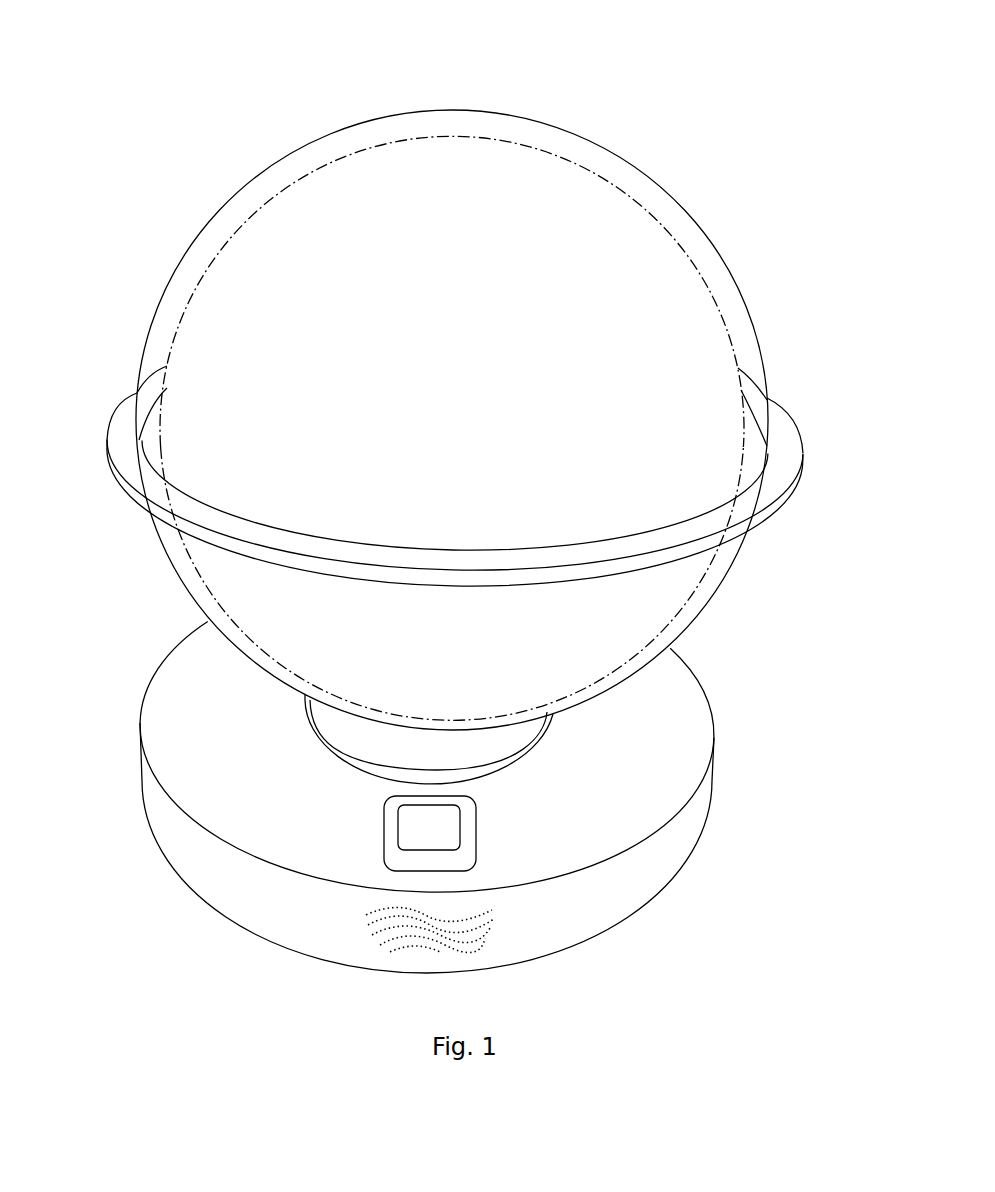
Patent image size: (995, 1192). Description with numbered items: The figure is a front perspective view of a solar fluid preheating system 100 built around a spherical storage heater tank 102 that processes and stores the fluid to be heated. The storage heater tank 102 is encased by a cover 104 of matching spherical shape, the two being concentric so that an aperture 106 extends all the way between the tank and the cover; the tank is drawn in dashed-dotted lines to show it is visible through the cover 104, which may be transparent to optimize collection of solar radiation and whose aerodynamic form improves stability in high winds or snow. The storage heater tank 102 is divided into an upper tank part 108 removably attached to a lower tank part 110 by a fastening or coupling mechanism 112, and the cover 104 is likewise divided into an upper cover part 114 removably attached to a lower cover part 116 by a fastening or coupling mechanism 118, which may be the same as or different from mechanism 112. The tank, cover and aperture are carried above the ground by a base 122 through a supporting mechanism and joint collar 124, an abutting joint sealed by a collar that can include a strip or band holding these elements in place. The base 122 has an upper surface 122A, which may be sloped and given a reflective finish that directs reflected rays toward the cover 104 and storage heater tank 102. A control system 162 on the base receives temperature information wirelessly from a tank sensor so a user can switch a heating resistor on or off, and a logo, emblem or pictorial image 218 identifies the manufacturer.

The solar fluid preheating system 100 is at (236, 158).
The storage heater tank 102 is at (719, 325).
The cover 104 is at (762, 370).
The aperture 106 is at (693, 247).
The upper tank part 108 is at (178, 352).
The lower tank part 110 is at (227, 607).
The fastening or coupling mechanism 112 is at (735, 470).
The upper cover part 114 is at (165, 292).
The lower cover part 116 is at (162, 542).
The fastening or coupling mechanism 118 is at (108, 445).
The base 122 is at (657, 787).
The upper surface 122A is at (598, 819).
The supporting mechanism and joint collar 124 is at (495, 740).
The control system 162 is at (407, 830).
The logo, emblem or pictorial image 218 is at (478, 932).